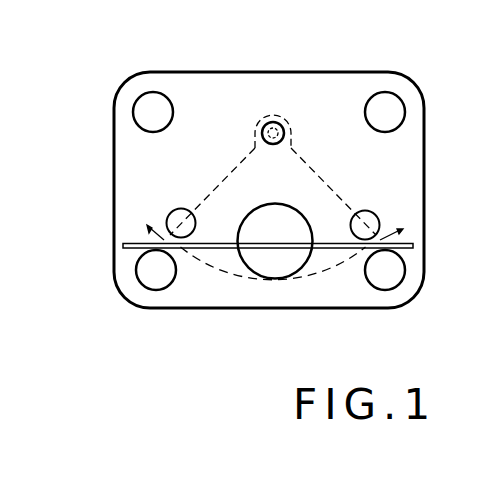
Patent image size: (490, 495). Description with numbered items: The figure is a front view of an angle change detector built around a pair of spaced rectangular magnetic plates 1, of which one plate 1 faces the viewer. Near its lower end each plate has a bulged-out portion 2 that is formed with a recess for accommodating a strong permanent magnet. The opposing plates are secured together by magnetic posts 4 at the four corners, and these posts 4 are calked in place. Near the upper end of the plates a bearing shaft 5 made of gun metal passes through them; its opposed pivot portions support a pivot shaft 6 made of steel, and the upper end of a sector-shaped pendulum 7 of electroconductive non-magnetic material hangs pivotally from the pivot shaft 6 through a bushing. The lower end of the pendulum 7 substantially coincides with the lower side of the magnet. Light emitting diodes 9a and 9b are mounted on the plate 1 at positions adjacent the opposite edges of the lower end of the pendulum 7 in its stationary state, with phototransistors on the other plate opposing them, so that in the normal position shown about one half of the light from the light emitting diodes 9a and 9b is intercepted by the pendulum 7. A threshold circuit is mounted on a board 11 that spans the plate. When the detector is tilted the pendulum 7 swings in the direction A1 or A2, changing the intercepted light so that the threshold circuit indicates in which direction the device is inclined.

The magnetic plate 1 is at (424, 158).
The bulged-out portion 2 is at (284, 280).
The magnetic post 4 is at (150, 103).
The bearing shaft 5 is at (283, 124).
The pivot shaft 6 is at (264, 127).
The sector-shaped pendulum 7 is at (216, 268).
The light emitting diode 9a is at (371, 210).
The light emitting diode 9b is at (179, 208).
The board 11 is at (426, 247).
The swing direction A1 is at (398, 219).
The swing direction A2 is at (149, 219).